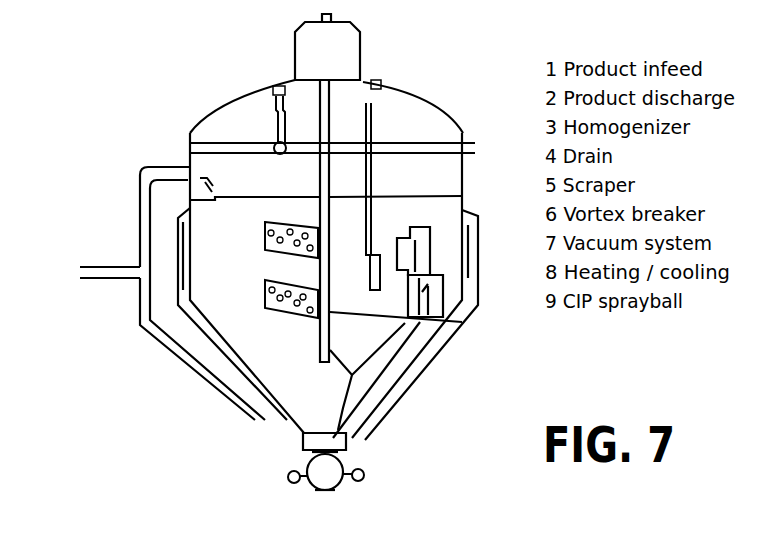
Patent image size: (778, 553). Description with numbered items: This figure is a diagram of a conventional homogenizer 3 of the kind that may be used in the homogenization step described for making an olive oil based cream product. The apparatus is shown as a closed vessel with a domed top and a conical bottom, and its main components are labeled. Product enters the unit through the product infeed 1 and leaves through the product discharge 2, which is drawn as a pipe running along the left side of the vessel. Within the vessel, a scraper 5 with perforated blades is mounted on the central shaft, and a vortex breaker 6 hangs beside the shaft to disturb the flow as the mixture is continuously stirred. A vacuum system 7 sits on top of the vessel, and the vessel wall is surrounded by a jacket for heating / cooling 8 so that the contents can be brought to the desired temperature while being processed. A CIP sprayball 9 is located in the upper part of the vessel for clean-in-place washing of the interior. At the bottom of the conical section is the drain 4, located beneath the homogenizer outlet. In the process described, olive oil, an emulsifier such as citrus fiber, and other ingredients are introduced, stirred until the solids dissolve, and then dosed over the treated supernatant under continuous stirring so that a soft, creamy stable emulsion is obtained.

The product infeed 1 is at (334, 482).
The product discharge 2 is at (160, 293).
The homogenizer 3 is at (296, 461).
The drain 4 is at (325, 507).
The scraper 5 is at (291, 270).
The vortex breaker 6 is at (363, 196).
The vacuum system 7 is at (327, 54).
The heating / cooling 8 is at (337, 324).
The CIP sprayball 9 is at (243, 144).